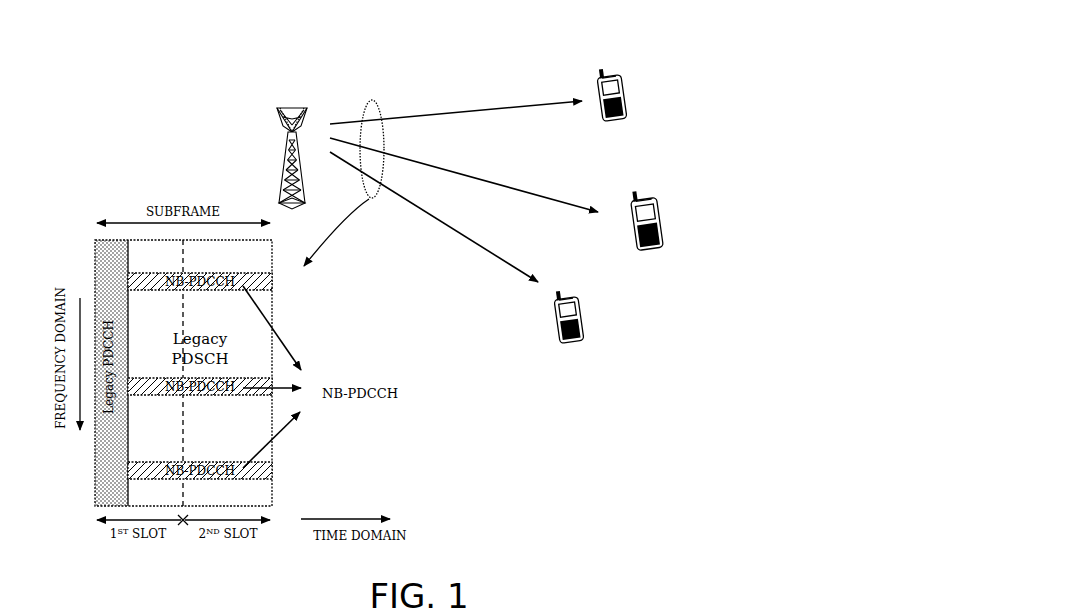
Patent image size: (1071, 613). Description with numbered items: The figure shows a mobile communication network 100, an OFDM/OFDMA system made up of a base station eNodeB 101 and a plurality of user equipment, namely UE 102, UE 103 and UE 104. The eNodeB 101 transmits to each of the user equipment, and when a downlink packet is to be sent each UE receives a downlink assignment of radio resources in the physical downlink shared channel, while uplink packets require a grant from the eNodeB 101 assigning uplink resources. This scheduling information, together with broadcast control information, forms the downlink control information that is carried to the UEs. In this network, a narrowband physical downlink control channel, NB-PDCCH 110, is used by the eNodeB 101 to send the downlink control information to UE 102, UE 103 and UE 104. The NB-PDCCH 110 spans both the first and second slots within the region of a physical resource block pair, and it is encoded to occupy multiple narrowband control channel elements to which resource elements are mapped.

The mobile communication network 100 is at (712, 50).
The eNodeB 101 is at (292, 108).
The UE 102 is at (618, 106).
The UE 103 is at (645, 232).
The UE 104 is at (575, 327).
The narrowband physical downlink control channel (NB-PDCCH) 110 is at (372, 104).